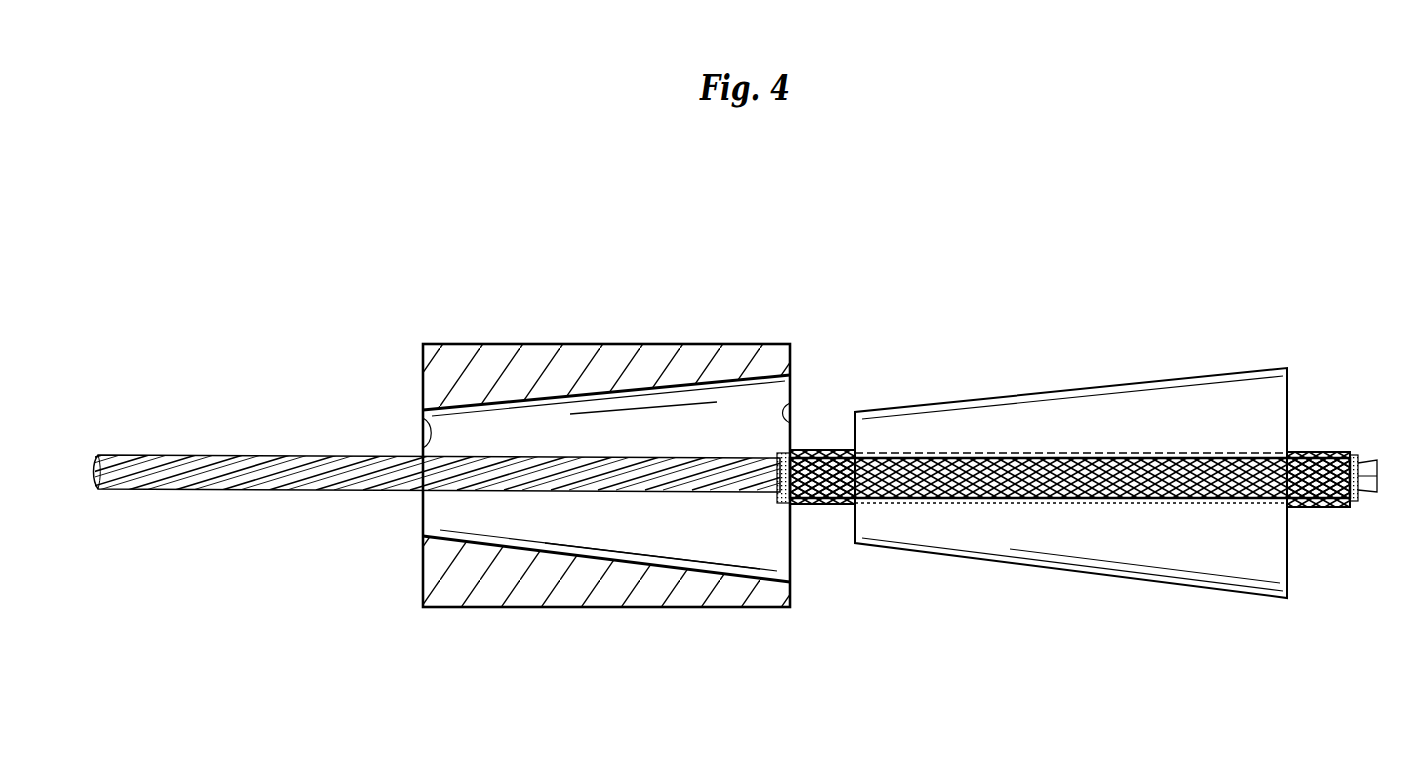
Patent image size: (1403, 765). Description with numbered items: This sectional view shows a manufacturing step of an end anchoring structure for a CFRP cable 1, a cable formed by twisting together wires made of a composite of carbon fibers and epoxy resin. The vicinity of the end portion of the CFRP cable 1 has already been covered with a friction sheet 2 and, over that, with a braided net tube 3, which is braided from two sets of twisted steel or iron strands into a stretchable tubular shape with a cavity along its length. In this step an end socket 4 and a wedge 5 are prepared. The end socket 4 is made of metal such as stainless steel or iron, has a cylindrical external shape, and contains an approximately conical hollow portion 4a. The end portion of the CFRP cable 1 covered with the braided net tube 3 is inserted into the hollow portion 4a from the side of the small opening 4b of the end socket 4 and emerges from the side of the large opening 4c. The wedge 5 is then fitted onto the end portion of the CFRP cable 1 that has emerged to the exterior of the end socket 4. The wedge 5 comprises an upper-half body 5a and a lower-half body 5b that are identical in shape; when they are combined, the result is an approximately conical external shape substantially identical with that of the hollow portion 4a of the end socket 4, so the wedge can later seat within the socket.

The CFRP cable 1 is at (285, 460).
The friction sheet 2 is at (1352, 507).
The braided net tube 3 is at (1318, 442).
The end socket 4 is at (515, 345).
The hollow portion 4a is at (708, 546).
The small opening 4b is at (423, 428).
The large opening 4c is at (793, 402).
The wedge 5 is at (1071, 458).
The upper-half body 5a is at (983, 422).
The lower-half body 5b is at (990, 543).